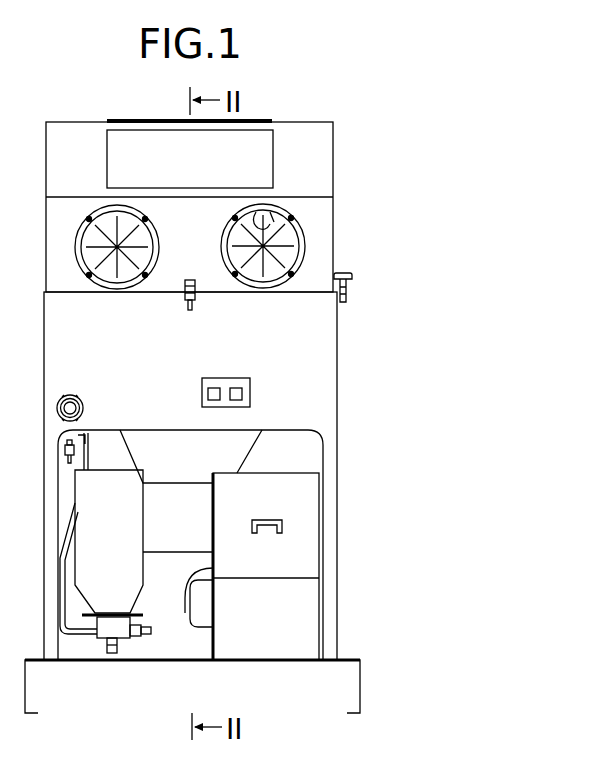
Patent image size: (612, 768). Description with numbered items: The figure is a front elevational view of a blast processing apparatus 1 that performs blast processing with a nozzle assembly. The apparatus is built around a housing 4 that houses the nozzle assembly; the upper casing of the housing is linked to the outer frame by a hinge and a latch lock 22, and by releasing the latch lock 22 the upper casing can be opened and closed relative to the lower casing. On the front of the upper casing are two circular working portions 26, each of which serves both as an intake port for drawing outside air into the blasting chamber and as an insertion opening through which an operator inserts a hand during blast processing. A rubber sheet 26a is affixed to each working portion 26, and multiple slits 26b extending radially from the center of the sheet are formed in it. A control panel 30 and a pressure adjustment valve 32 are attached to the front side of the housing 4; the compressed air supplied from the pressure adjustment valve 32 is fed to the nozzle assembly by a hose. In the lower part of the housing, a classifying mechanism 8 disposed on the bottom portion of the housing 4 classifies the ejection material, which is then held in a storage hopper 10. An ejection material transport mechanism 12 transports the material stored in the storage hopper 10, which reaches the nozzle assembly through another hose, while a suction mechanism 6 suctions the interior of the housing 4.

The blast processing apparatus 1 is at (432, 178).
The housing 4 is at (342, 339).
The suction mechanism 6 is at (326, 529).
The classifying mechanism 8 is at (169, 474).
The storage hopper 10 is at (120, 636).
The ejection material transport mechanism 12 is at (160, 639).
The latch lock 22 is at (201, 299).
The working portion 26 is at (314, 218).
The rubber sheet 26a is at (276, 221).
The slits 26b is at (258, 212).
The control panel 30 is at (240, 384).
The pressure adjustment valve 32 is at (84, 405).